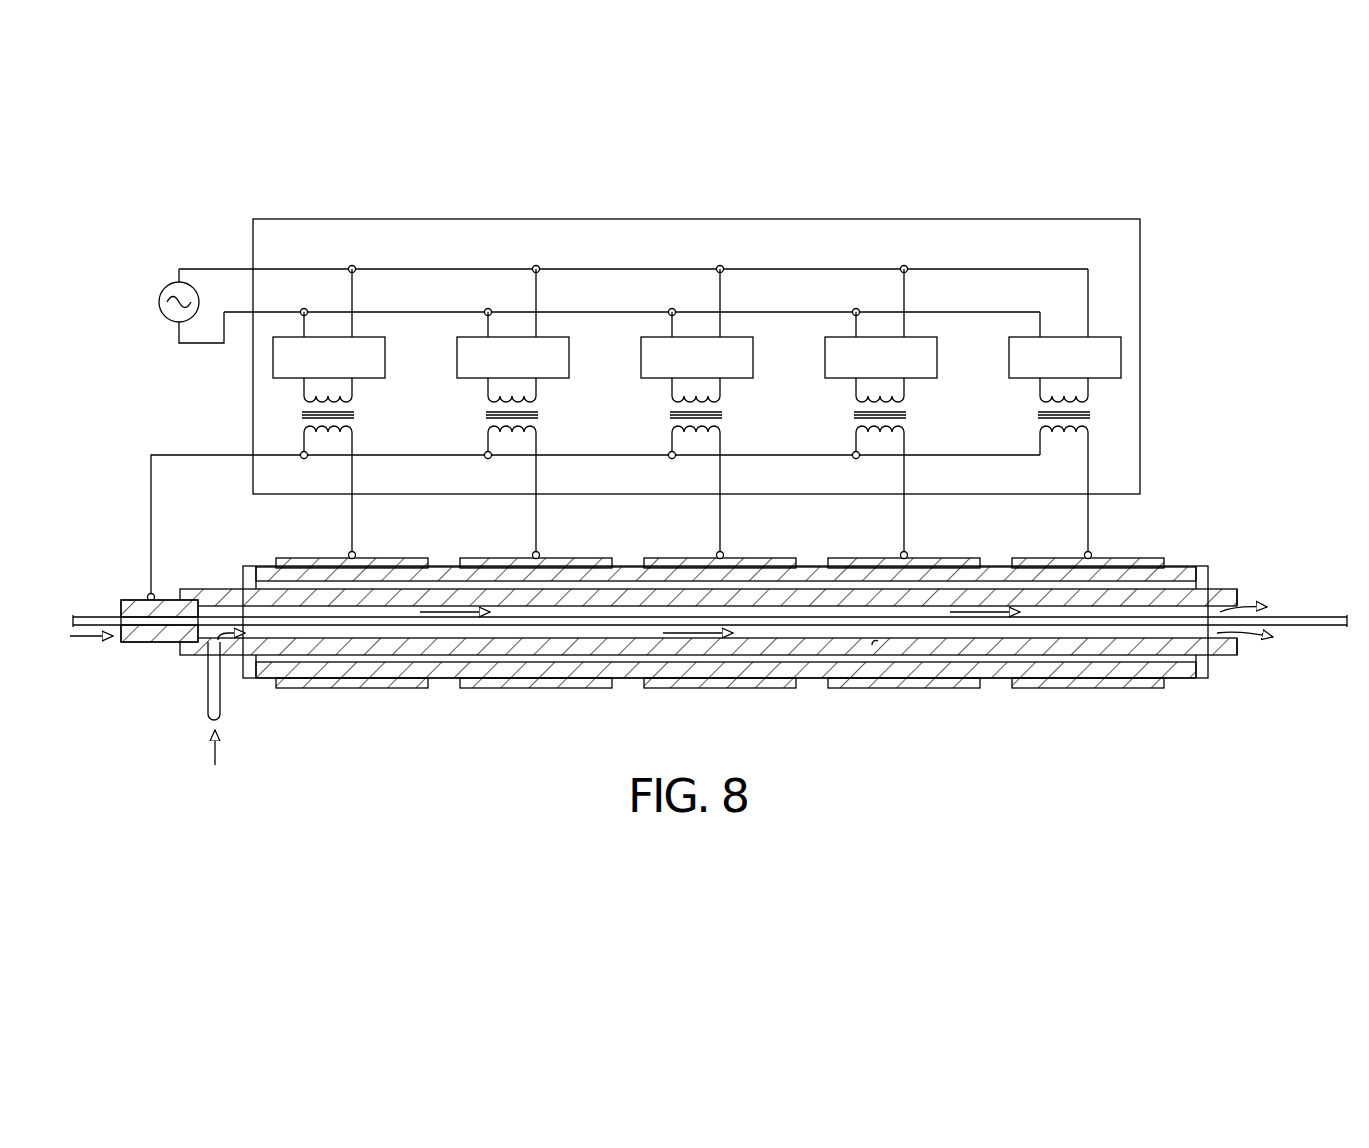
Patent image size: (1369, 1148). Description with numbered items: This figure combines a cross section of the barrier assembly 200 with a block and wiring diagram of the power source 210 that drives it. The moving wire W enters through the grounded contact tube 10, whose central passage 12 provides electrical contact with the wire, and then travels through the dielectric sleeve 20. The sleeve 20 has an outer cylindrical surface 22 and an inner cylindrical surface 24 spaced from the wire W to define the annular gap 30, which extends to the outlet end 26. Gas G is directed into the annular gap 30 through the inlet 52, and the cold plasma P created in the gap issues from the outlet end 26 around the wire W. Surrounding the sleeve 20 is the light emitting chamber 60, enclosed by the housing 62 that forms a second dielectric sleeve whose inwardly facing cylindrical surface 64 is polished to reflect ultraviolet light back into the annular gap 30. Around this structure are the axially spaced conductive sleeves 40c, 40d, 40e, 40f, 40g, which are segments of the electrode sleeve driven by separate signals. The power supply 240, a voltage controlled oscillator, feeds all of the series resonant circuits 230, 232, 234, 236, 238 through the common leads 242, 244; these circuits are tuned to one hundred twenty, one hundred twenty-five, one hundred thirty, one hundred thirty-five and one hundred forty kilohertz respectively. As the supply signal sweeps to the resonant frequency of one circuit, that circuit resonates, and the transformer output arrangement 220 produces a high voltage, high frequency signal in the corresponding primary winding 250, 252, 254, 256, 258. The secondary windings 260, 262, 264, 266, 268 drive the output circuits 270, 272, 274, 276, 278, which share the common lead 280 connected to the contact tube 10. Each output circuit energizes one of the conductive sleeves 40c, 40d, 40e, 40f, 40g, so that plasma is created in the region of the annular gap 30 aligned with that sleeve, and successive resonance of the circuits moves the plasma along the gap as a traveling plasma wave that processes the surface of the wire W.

The contact tube 10 is at (132, 590).
The central passage 12 is at (157, 637).
The dielectric sleeve 20 is at (1222, 664).
The outer cylindrical surface 22 is at (818, 657).
The inner cylindrical surface 24 is at (876, 636).
The outlet end 26 is at (1240, 650).
The annular gap 30 is at (947, 634).
The conductive sleeve 40c is at (385, 557).
The conductive sleeve 40d is at (569, 557).
The conductive sleeve 40e is at (753, 557).
The conductive sleeve 40f is at (937, 557).
The conductive sleeve 40g is at (1121, 557).
The inlet 52 is at (208, 706).
The light emitting chamber 60 is at (1107, 660).
The housing 62 is at (447, 685).
The inwardly facing cylindrical surface 64 is at (570, 660).
The barrier assembly 200 is at (1040, 708).
The power source 210 is at (1160, 266).
The transformer output arrangement 220 is at (1115, 415).
The series resonant circuit 230 is at (273, 355).
The series resonant circuit 232 is at (457, 357).
The series resonant circuit 234 is at (641, 357).
The series resonant circuit 236 is at (825, 357).
The series resonant circuit 238 is at (1009, 357).
The power supply 240 is at (165, 317).
The common lead 242 is at (405, 270).
The common lead 244 is at (592, 312).
The primary winding 250 is at (353, 403).
The primary winding 252 is at (537, 403).
The primary winding 254 is at (721, 403).
The primary winding 256 is at (905, 403).
The primary winding 258 is at (1091, 402).
The secondary winding 260 is at (353, 431).
The secondary winding 262 is at (537, 431).
The secondary winding 264 is at (721, 431).
The secondary winding 266 is at (905, 431).
The secondary winding 268 is at (1091, 431).
The output circuit 270 is at (353, 472).
The output circuit 272 is at (537, 472).
The output circuit 274 is at (721, 472).
The output circuit 276 is at (905, 472).
The output circuit 278 is at (1091, 467).
The common lead 280 is at (185, 458).
The gas G is at (215, 757).
The plasma P is at (1247, 600).
The wire W is at (1307, 630).